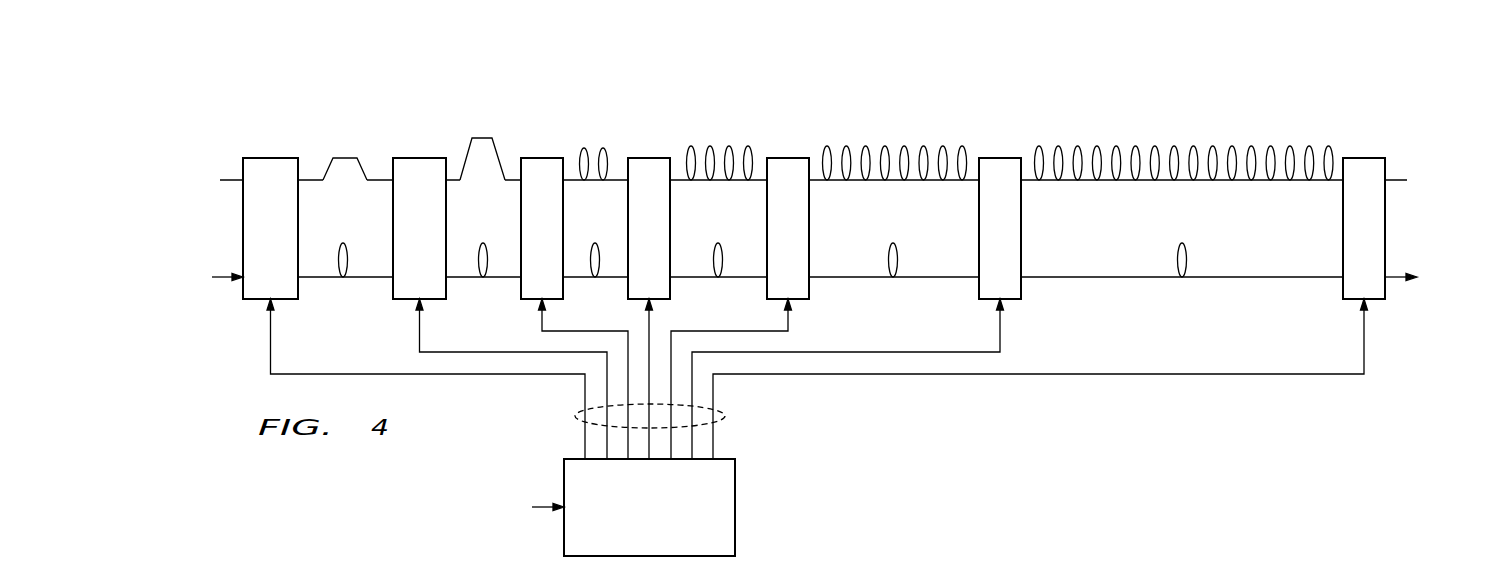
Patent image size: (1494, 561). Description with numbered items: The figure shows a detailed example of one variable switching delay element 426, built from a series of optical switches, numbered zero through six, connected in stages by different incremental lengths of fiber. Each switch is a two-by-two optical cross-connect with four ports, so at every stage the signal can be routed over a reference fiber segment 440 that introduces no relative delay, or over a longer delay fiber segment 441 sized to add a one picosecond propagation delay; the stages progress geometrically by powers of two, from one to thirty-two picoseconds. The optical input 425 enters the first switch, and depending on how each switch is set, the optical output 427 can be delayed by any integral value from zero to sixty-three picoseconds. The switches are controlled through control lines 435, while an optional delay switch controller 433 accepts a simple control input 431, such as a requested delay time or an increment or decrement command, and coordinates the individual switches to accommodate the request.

The variable switching delay element 426 is at (417, 86).
The delay fiber segment 441 is at (338, 161).
The reference fiber segment 440 is at (382, 277).
The optical input 425 is at (190, 280).
The optical output 427 is at (1439, 276).
The control input 431 is at (509, 508).
The delay switch controller 433 is at (735, 508).
The control lines 435 is at (725, 418).